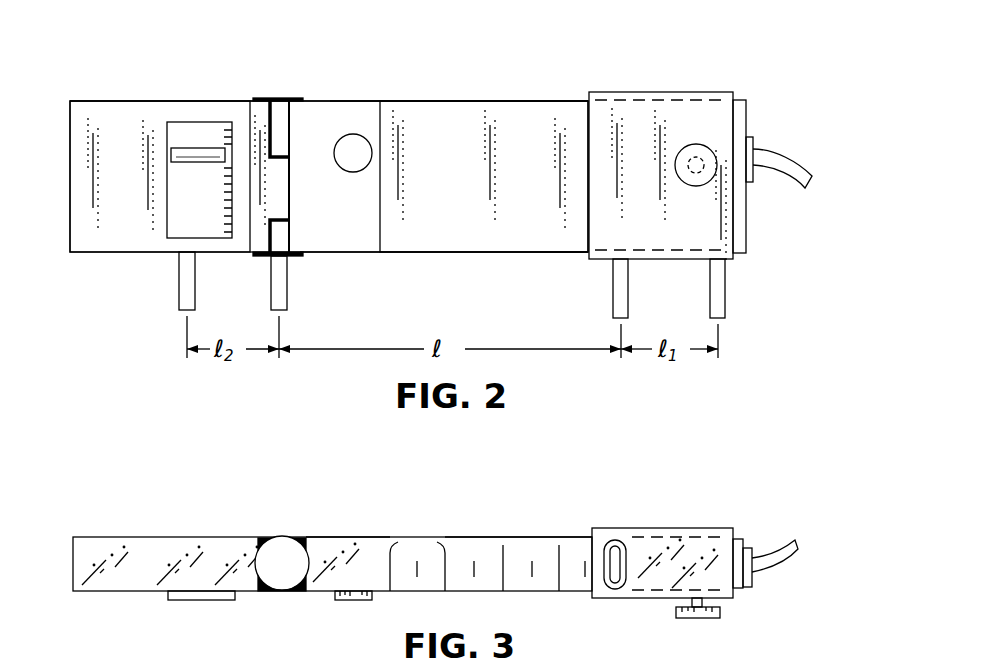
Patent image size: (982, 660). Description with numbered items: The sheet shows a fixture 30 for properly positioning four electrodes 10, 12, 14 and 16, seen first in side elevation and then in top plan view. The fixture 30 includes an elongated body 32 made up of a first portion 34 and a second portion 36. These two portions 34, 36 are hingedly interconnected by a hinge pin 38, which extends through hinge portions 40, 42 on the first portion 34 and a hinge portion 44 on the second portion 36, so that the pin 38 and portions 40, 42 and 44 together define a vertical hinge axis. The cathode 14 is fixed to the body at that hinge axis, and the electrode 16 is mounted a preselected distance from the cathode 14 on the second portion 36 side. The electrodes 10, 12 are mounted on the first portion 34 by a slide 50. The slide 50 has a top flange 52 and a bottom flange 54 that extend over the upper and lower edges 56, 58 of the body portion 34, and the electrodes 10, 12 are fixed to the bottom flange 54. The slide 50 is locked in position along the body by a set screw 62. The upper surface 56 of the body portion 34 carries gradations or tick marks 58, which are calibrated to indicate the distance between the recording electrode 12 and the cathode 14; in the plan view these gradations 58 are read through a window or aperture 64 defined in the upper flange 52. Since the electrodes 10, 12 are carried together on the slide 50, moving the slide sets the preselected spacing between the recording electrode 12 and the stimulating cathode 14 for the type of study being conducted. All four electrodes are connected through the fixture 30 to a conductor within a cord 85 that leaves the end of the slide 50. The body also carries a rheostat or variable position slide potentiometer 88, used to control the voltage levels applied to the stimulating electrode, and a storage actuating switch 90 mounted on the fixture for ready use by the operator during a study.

In FIG. 2, the electrode 10 is at (720, 290).
In FIG. 2, the recording electrode 12 is at (618, 290).
In FIG. 2, the cathode 14 is at (283, 286).
In FIG. 2, the electrode 16 is at (185, 292).
In FIG. 2, the fixture 30 is at (542, 84).
In FIG. 3, the fixture 30 is at (218, 508).
In FIG. 2, the elongated body 32 is at (330, 100).
In FIG. 2, the first portion 34 is at (538, 171).
In FIG. 3, the first portion 34 is at (497, 537).
In FIG. 2, the second portion 36 is at (125, 226).
In FIG. 2, the hinge pin 38 is at (280, 98).
In FIG. 2, the portion 40 is at (273, 127).
In FIG. 2, the portion 42 is at (283, 236).
In FIG. 2, the portion 44 is at (277, 175).
In FIG. 2, the slide 50 is at (681, 118).
In FIG. 2, the top flange 52 is at (636, 92).
In FIG. 3, the top flange 52 is at (686, 545).
In FIG. 2, the bottom flange 54 is at (590, 262).
In FIG. 2, the upper edge 56 is at (472, 100).
In FIG. 3, the upper edge 56 is at (333, 548).
In FIG. 2, the tick marks 58 is at (445, 254).
In FIG. 3, the tick marks 58 is at (430, 547).
In FIG. 3, the set screw 62 is at (710, 614).
In FIG. 3, the window 64 is at (612, 540).
In FIG. 2, the cord 85 is at (785, 155).
In FIG. 3, the cord 85 is at (770, 563).
In FIG. 2, the variable position slide potentiometer 88 is at (185, 138).
In FIG. 2, the storage actuating switch 90 is at (358, 145).
In FIG. 3, the storage actuating switch 90 is at (282, 563).